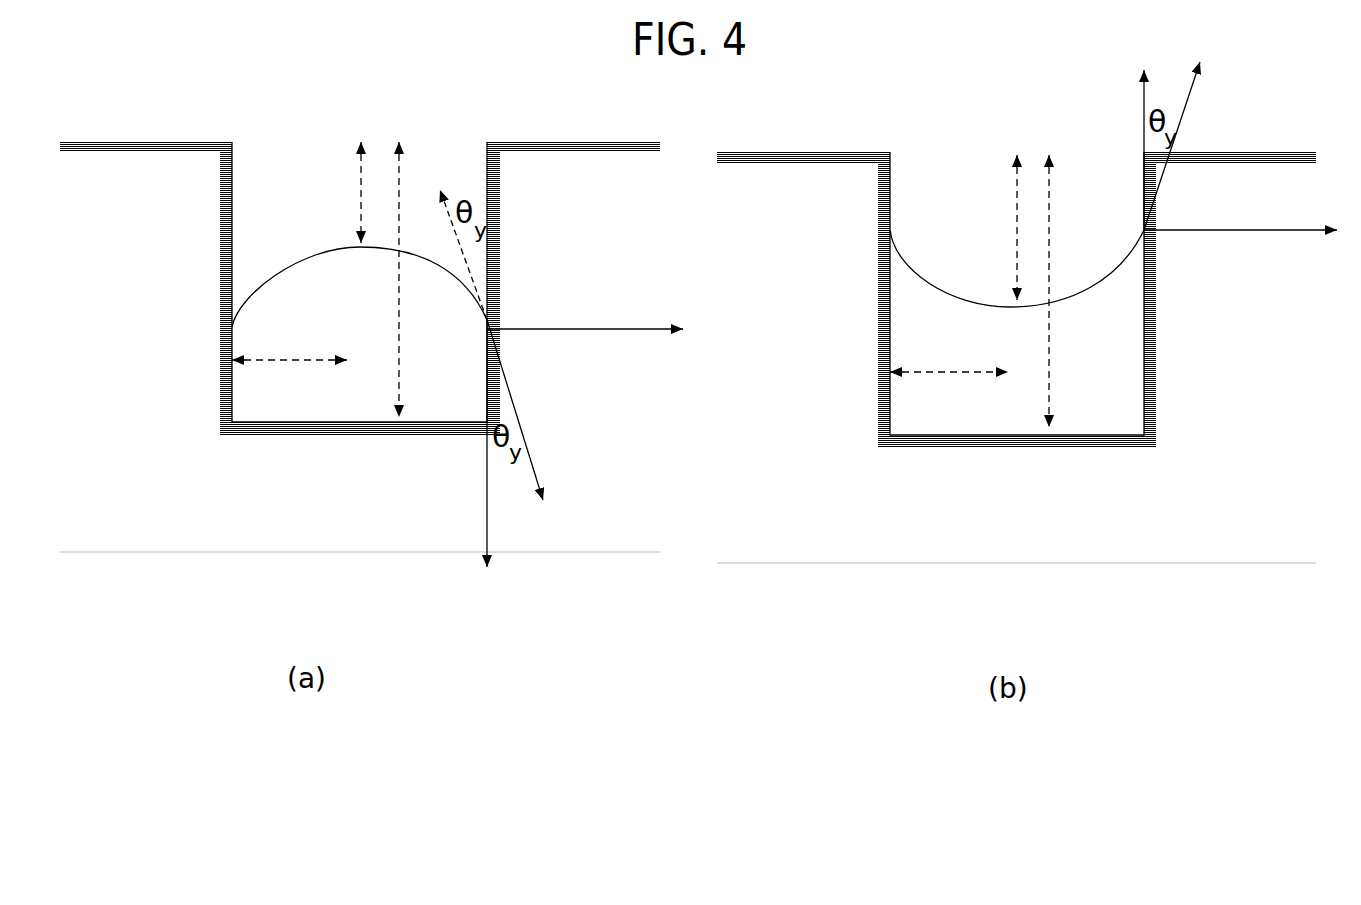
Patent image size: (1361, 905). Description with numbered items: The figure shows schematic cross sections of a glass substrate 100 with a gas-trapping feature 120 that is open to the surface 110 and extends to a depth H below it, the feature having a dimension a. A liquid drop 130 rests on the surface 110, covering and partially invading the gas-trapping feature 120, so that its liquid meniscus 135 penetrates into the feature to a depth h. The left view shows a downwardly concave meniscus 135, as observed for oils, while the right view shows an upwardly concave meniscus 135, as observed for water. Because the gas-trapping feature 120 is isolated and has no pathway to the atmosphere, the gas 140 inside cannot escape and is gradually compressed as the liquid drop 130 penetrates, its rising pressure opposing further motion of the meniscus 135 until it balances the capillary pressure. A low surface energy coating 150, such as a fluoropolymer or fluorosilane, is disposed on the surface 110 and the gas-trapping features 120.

The glass substrate 100 is at (210, 560).
The surface 110 is at (187, 138).
The gas-trapping feature 120 is at (347, 407).
The liquid drop 130 is at (732, 284).
The liquid meniscus 135 is at (286, 256).
The gas 140 is at (630, 350).
The low surface energy coating 150 is at (1248, 155).